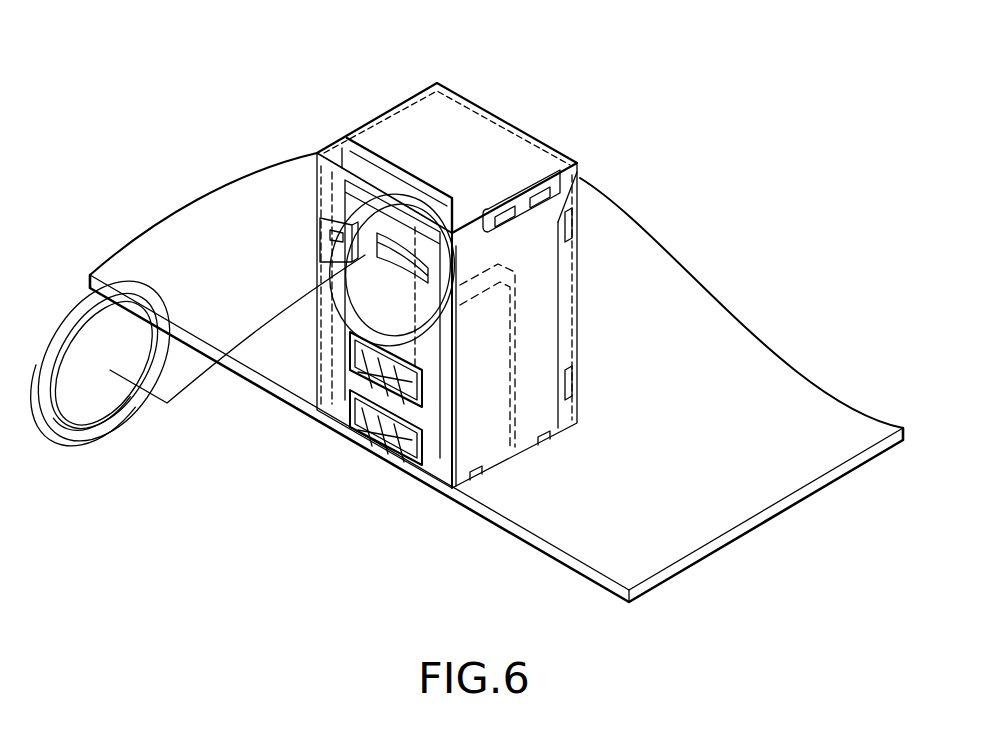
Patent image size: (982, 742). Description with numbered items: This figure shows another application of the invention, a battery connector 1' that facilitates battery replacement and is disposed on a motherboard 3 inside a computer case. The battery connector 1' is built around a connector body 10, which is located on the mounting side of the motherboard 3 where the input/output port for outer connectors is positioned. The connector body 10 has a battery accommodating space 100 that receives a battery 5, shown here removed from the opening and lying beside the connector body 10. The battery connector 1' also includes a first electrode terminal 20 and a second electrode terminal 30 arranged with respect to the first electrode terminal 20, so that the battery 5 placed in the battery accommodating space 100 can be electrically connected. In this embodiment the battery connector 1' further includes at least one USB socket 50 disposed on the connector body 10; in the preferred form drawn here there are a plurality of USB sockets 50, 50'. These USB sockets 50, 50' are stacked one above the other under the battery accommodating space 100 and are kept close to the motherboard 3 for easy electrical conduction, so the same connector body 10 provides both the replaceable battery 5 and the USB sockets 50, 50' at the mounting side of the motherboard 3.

The battery connector 1' is at (422, 131).
The motherboard 3 is at (748, 527).
The battery 5 is at (70, 328).
The connector body 10 is at (540, 340).
The first electrode terminal 20 is at (400, 267).
The second electrode terminal 30 is at (337, 247).
The USB socket 50 is at (336, 393).
The USB socket 50' is at (349, 453).
The battery accommodating space 100 is at (392, 318).